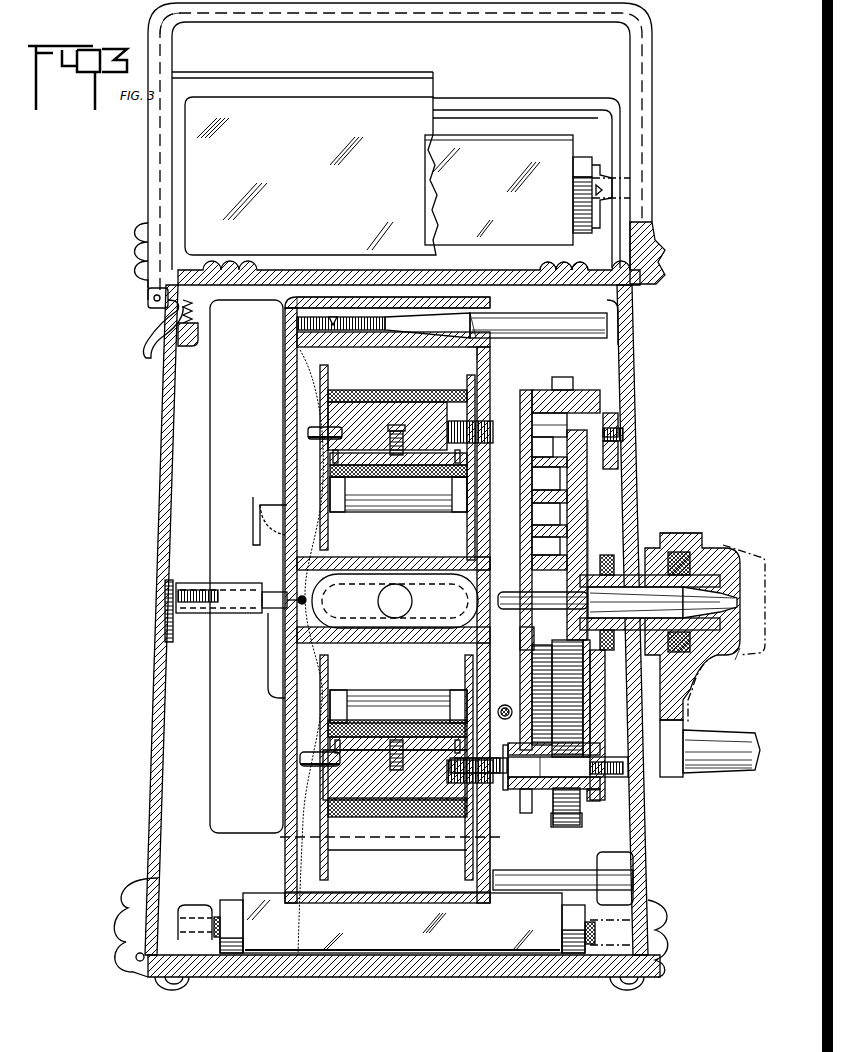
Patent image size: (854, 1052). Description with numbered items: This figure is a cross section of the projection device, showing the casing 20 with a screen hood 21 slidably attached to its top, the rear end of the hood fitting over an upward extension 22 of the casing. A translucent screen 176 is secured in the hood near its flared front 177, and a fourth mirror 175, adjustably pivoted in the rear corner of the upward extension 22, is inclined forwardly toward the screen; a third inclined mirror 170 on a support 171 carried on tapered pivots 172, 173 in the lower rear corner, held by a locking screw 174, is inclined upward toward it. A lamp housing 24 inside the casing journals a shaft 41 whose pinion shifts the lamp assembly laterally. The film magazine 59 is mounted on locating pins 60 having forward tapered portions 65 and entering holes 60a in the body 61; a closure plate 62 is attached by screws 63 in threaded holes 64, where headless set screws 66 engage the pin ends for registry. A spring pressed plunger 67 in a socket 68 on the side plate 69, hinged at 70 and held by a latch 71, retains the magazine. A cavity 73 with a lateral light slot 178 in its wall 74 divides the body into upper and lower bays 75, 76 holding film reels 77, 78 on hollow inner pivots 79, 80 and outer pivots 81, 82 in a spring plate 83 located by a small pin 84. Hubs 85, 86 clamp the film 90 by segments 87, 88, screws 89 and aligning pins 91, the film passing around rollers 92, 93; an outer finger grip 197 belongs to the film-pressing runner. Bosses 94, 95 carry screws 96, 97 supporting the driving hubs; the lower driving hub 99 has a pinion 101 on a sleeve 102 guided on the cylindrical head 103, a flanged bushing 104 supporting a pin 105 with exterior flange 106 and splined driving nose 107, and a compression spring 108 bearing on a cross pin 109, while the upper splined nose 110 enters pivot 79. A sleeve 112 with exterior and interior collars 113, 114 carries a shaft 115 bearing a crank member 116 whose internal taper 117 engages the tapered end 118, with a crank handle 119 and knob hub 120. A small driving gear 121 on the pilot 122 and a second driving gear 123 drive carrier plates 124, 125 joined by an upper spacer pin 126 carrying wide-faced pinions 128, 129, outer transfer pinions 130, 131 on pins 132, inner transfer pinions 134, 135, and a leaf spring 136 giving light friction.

The casing 20 is at (583, 268).
The screen hood 21 is at (645, 132).
The upward extension 22 is at (582, 98).
The lamp housing 24 is at (213, 412).
The shaft 41 is at (505, 705).
The film magazine 59 is at (312, 895).
The locating pins 60 is at (512, 890).
The holes 60a is at (408, 317).
The body 61 is at (325, 295).
The closure plate 62 is at (284, 382).
The screws 63 is at (293, 315).
The threaded holes 64 is at (335, 317).
The forward tapered portions 65 is at (473, 313).
The headless set screws 66 is at (350, 347).
The spring pressed plunger 67 is at (276, 609).
The socket 68 is at (197, 613).
The side plate 69 is at (160, 652).
The hinge 70 is at (143, 962).
The latch 71 is at (195, 296).
The cavity 73 is at (492, 570).
The wall 74 is at (410, 557).
The upper bay 75 is at (491, 362).
The lower bay 76 is at (458, 895).
The film reel 77 is at (470, 385).
The film reel 78 is at (330, 870).
The hollow inner pivot 79 is at (405, 428).
The hollow inner pivot 80 is at (405, 800).
The outer pivot 81 is at (320, 427).
The outer pivot 82 is at (312, 766).
The spring plate 83 is at (315, 690).
The small pin 84 is at (298, 596).
The hub 85 is at (365, 402).
The hub 86 is at (355, 810).
The segment 87 is at (430, 480).
The segment 88 is at (368, 722).
The screws 89 is at (400, 737).
The film 90 is at (380, 817).
The aligning pins 91 is at (335, 745).
The roller 92 is at (380, 512).
The roller 93 is at (390, 695).
The boss 94 is at (618, 415).
The boss 95 is at (600, 795).
The screw 96 is at (623, 434).
The screw 97 is at (627, 775).
The lower driving hub 99 is at (553, 815).
The pinion 101 is at (570, 745).
The sleeve 102 is at (597, 793).
The cylindrical head 103 is at (587, 747).
The flanged bushing 104 is at (522, 813).
The pin 105 is at (566, 827).
The exterior flange 106 is at (450, 783).
The splined driving nose 107 is at (497, 760).
The compression spring 108 is at (505, 745).
The cross pin 109 is at (575, 730).
The splined nose 110 is at (485, 430).
The sleeve 112 is at (650, 560).
The exterior collar 113 is at (700, 533).
The interior collar 114 is at (606, 555).
The shaft 115 is at (606, 650).
The crank member 116 is at (700, 695).
The internal taper 117 is at (715, 585).
The tapered end 118 is at (728, 660).
The crank handle 119 is at (710, 773).
The hub 120 is at (740, 553).
The small driving gear 121 is at (520, 640).
The pilot 122 is at (510, 609).
The second driving gear 123 is at (588, 477).
The carrier plate 124 is at (600, 398).
The carrier plate 125 is at (528, 395).
The upper spacer pin 126 is at (578, 390).
The wide-faced pinion 128 is at (562, 377).
The wide-faced pinion 129 is at (582, 822).
The outer transfer pinion 130 is at (532, 505).
The outer transfer pinion 131 is at (544, 695).
The pin 132 is at (532, 475).
The inner transfer pinion 134 is at (532, 545).
The inner transfer pinion 135 is at (559, 698).
The leaf spring 136 is at (588, 516).
The third inclined mirror 170 is at (425, 955).
The support 171 is at (232, 900).
The tapered pivot 172 is at (590, 945).
The tapered pivot 173 is at (216, 917).
The locking screw 174 is at (180, 910).
The fourth mirror 175 is at (545, 144).
The translucent screen 176 is at (188, 167).
The flared front 177 is at (165, 25).
The lateral light slot 178 is at (448, 578).
The outer finger grip 197 is at (263, 497).